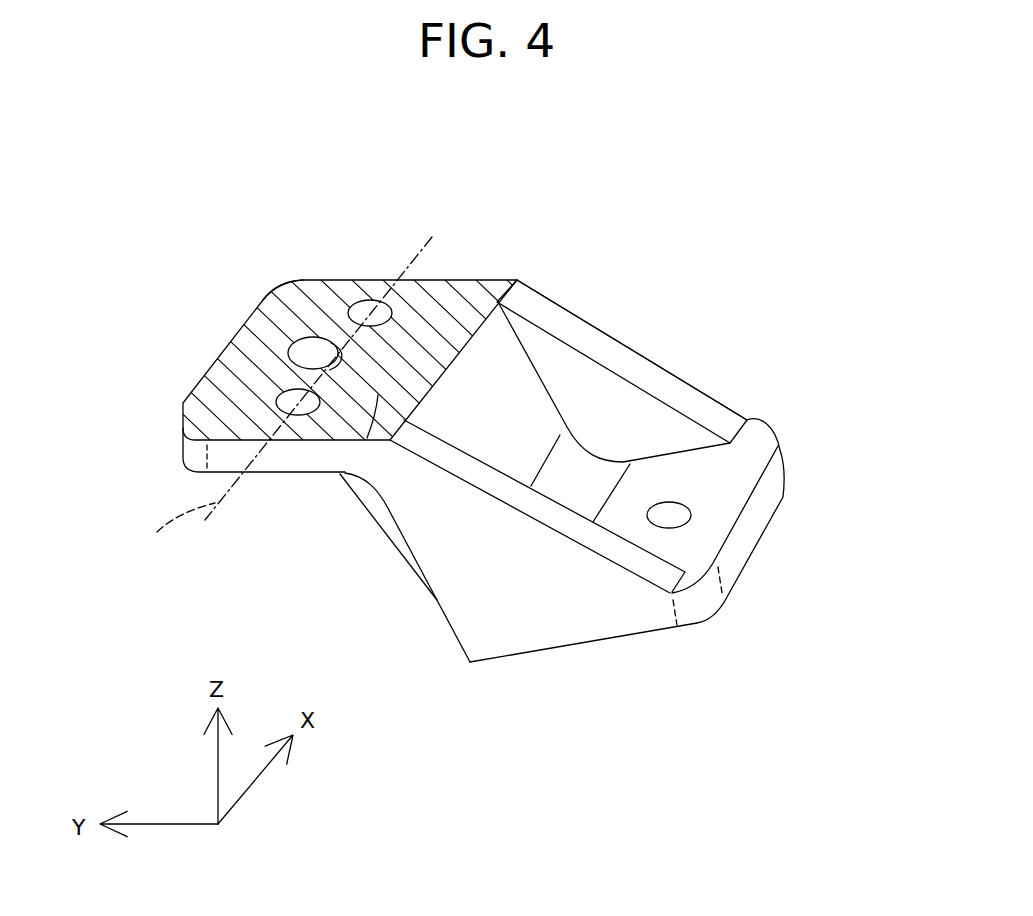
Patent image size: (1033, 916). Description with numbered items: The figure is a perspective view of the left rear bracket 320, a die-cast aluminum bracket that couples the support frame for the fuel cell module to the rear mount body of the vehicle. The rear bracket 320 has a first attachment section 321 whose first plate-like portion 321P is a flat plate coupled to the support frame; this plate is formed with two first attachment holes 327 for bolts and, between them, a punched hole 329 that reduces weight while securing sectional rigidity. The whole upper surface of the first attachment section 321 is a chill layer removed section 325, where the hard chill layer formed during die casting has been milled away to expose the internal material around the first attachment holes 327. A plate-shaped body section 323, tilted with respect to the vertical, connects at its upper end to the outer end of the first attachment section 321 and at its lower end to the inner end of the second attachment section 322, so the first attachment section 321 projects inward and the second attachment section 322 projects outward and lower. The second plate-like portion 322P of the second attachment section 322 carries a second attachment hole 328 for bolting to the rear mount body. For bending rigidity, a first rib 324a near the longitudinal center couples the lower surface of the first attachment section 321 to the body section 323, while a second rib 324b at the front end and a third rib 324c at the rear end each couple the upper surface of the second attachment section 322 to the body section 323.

The rear bracket 320 is at (474, 420).
The first attachment section 321 is at (343, 357).
The first plate-like portion 321P is at (323, 302).
The second attachment section 322 is at (687, 523).
The second plate-like portion 322P is at (722, 483).
The body section 323 is at (622, 358).
The first rib 324a is at (390, 552).
The second rib 324b is at (657, 554).
The third rib 324c is at (657, 363).
The chill layer removed section 325 is at (287, 308).
The first attachment holes 327 is at (279, 408).
The second attachment hole 328 is at (691, 511).
The punched hole 329 is at (367, 438).